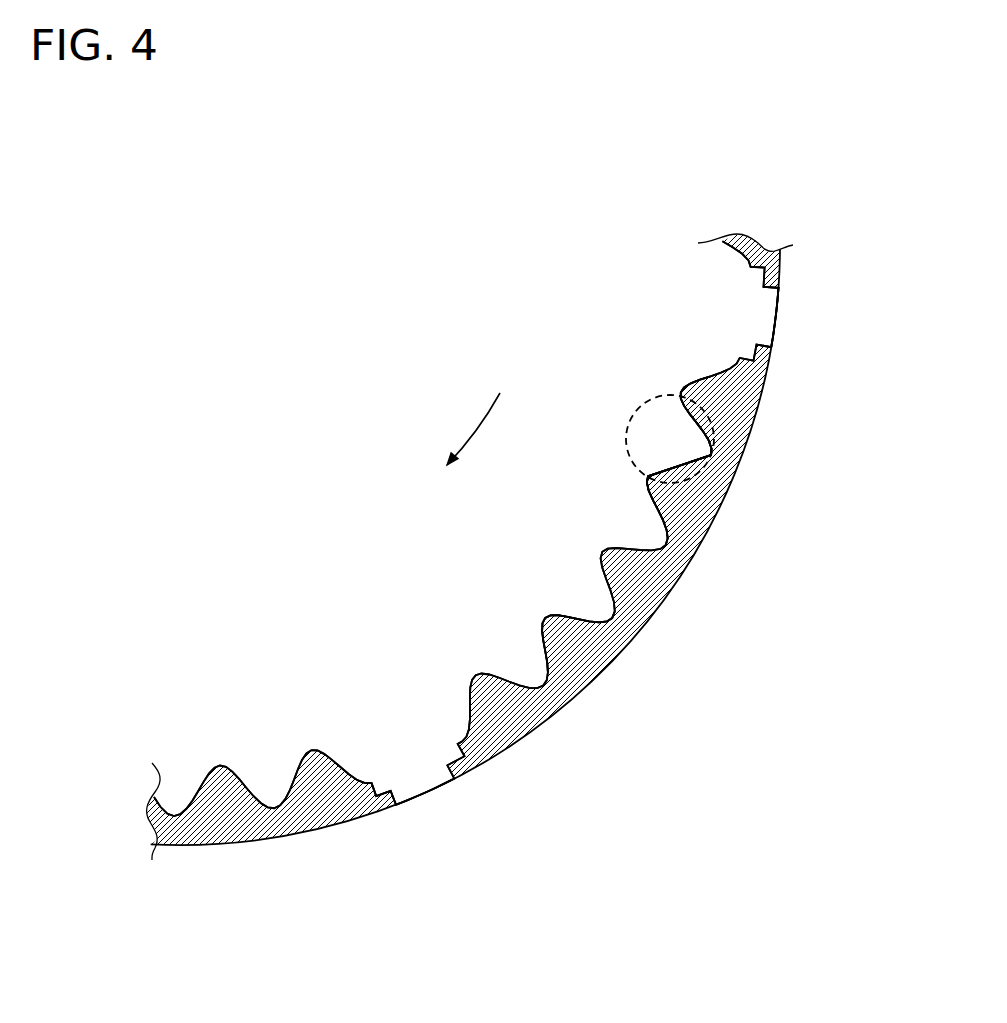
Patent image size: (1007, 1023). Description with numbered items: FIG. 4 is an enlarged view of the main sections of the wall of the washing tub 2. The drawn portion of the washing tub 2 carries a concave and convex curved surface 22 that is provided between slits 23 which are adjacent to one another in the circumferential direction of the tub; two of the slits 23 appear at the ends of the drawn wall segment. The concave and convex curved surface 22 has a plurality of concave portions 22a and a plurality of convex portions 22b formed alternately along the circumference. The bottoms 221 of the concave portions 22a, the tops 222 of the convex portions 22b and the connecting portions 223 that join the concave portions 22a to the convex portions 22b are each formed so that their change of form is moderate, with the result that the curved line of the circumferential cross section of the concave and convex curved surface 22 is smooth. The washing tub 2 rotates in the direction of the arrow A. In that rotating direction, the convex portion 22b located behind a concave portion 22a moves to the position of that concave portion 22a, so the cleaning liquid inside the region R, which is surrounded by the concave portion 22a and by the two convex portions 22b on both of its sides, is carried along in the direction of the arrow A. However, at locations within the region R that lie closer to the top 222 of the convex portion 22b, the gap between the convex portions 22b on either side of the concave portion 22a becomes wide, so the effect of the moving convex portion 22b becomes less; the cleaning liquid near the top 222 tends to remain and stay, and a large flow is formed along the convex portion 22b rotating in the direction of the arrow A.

The washing tub 2 is at (571, 707).
The concave and convex curved surface 22 is at (683, 583).
The concave portion 22a is at (690, 453).
The convex portion 22b is at (700, 377).
The slit 23 is at (767, 320).
The bottom of the concave portion 221 is at (712, 456).
The top of the convex portion 222 is at (676, 397).
The connecting portion 223 is at (690, 428).
The region R is at (697, 474).
The arrow indicating the rotating direction A is at (473, 427).